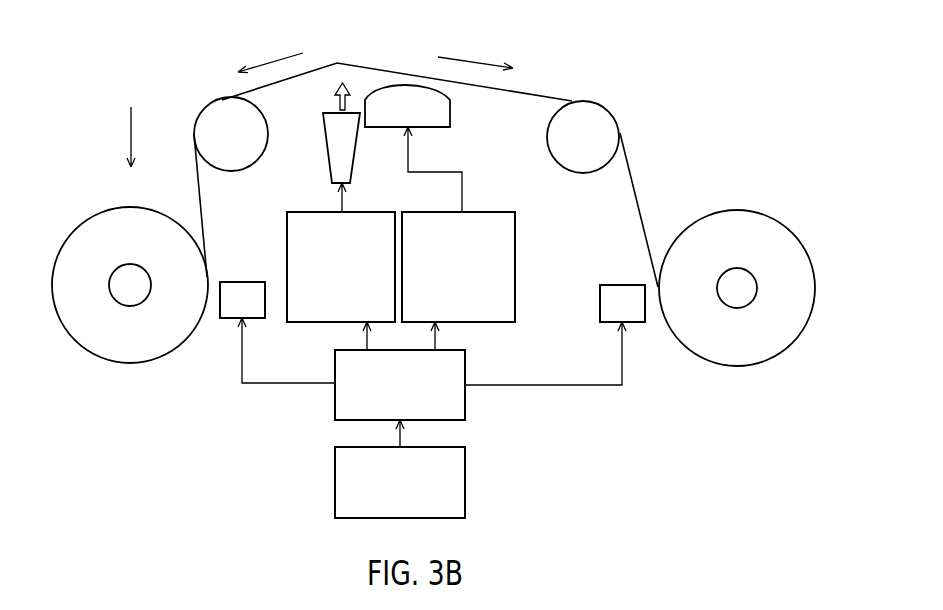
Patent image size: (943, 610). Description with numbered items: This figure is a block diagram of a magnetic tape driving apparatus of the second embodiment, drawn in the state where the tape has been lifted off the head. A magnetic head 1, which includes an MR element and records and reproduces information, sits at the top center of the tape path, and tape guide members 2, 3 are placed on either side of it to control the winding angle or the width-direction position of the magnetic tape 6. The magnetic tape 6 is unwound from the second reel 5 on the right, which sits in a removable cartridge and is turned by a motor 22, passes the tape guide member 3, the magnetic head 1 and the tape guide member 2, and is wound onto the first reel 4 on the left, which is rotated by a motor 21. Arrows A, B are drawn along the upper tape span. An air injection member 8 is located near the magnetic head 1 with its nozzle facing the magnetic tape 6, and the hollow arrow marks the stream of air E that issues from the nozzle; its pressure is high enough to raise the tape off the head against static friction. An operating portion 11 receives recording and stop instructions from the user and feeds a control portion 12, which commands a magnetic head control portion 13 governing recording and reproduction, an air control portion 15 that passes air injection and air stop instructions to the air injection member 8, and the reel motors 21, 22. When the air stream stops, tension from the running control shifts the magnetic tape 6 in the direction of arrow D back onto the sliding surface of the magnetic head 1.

The magnetic head 1 is at (452, 113).
The tape guide member 2 is at (213, 101).
The tape guide member 3 is at (610, 103).
The first reel 4 is at (130, 363).
The second reel 5 is at (737, 367).
The magnetic tape 6 is at (636, 198).
The air injection member 8 is at (326, 164).
The operating portion 11 is at (467, 470).
The control portion 12 is at (467, 360).
The magnetic head control portion 13 is at (485, 210).
The air control portion 15 is at (358, 210).
The motor 21 is at (240, 282).
The motor 22 is at (620, 285).
The tape running direction A is at (275, 55).
The tape running direction B is at (472, 60).
The arrow D is at (135, 125).
The stream of air E is at (337, 101).